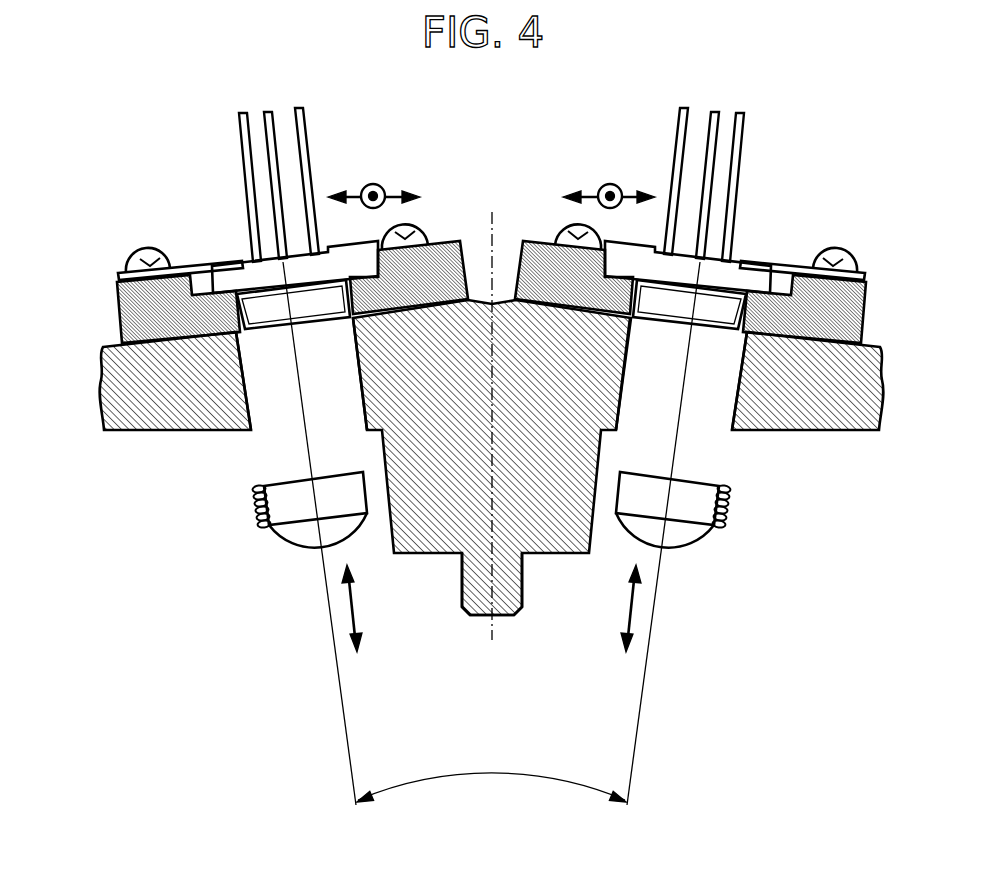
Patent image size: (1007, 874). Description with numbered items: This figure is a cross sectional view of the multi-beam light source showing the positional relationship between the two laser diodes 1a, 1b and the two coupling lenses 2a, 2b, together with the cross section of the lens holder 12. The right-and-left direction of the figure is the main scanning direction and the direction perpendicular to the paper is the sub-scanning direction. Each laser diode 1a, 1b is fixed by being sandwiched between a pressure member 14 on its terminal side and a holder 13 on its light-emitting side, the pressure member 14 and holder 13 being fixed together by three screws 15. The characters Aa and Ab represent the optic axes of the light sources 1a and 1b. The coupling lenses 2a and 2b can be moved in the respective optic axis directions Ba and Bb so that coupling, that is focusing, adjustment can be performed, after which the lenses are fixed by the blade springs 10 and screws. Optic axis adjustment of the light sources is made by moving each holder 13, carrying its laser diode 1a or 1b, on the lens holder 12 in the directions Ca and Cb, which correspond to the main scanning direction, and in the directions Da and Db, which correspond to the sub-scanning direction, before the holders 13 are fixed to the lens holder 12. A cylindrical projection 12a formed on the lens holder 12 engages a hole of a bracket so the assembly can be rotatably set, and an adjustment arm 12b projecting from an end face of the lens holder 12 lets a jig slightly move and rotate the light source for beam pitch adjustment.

The laser diode 1a is at (746, 112).
The laser diode 1b is at (243, 112).
The coupling lens 2a is at (680, 546).
The coupling lens 2b is at (303, 546).
The blade spring 10 is at (255, 513).
The lens holder 12 is at (132, 431).
The cylindrical projection 12a is at (508, 618).
The adjustment arm 12b is at (265, 428).
The holder 13 is at (116, 284).
The pressure member 14 is at (218, 262).
The screw 15 is at (570, 222).
The optic axis Aa is at (633, 772).
The optic axis Ab is at (350, 772).
The optic axis direction Ba is at (620, 608).
The optic axis direction Bb is at (365, 608).
The main scanning adjustment direction Ca is at (588, 194).
The main scanning adjustment direction Cb is at (349, 194).
The sub-scanning adjustment direction Da is at (608, 183).
The sub-scanning adjustment direction Db is at (373, 183).